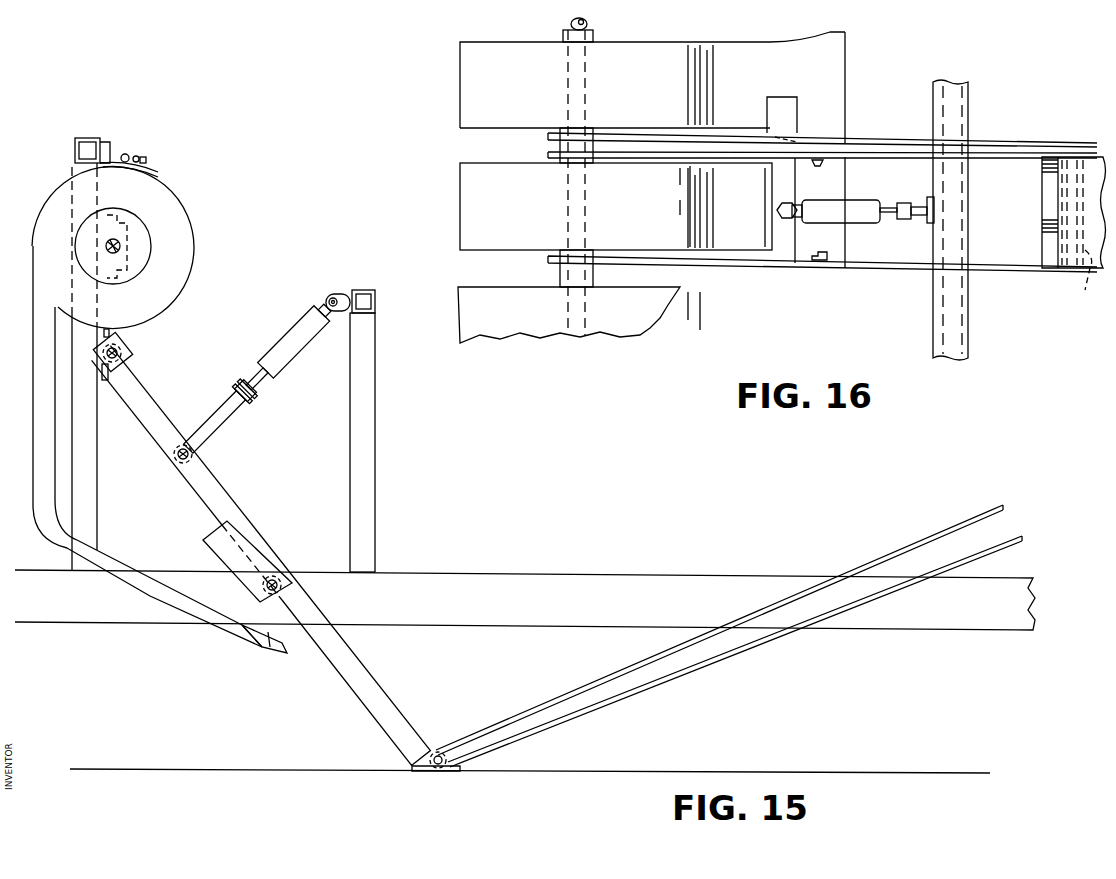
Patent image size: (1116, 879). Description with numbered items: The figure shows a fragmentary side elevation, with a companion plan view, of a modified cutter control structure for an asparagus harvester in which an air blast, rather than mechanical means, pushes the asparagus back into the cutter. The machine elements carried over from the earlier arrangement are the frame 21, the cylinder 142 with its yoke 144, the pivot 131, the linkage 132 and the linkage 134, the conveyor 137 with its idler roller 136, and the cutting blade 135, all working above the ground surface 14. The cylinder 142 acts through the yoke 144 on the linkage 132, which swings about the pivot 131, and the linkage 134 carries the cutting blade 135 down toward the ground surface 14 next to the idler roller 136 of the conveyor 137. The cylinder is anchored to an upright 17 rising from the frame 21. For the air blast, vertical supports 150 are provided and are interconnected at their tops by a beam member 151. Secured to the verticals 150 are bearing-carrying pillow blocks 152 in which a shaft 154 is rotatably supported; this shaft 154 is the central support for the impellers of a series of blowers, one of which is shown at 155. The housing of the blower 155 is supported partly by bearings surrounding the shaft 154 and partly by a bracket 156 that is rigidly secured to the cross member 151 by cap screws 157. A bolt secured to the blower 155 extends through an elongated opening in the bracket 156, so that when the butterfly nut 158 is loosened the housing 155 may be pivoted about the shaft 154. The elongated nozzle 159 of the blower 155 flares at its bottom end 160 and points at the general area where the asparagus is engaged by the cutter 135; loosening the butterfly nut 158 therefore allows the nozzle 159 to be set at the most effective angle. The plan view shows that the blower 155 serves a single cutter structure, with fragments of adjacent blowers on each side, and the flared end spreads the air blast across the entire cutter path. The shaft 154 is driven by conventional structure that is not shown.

In FIG. 15, the ground surface 14 is at (248, 768).
In FIG. 15, the upright post 17 is at (364, 290).
In FIG. 16, the upright post 17 is at (955, 100).
In FIG. 15, the frame 21 is at (497, 578).
In FIG. 15, the pivot 131 is at (128, 349).
In FIG. 15, the linkage 132 is at (150, 392).
In FIG. 16, the linkage 132 is at (608, 257).
In FIG. 15, the linkage 134 is at (372, 688).
In FIG. 16, the linkage 134 is at (997, 270).
In FIG. 15, the cutting blade 135 is at (420, 765).
In FIG. 16, the cutting blade 135 is at (1045, 190).
In FIG. 15, the idler roller 136 is at (442, 752).
In FIG. 16, the idler roller 136 is at (1086, 282).
In FIG. 15, the conveyor 137 is at (608, 680).
In FIG. 16, the conveyor 137 is at (1090, 165).
In FIG. 15, the cylinder 142 is at (290, 328).
In FIG. 16, the cylinder 142 is at (868, 200).
In FIG. 15, the yoke 144 is at (228, 418).
In FIG. 16, the yoke 144 is at (790, 183).
In FIG. 15, the vertical supports 150 is at (88, 458).
In FIG. 15, the beam member 151 is at (82, 138).
In FIG. 15, the pillow blocks 152 is at (128, 236).
In FIG. 15, the shaft 154 is at (120, 246).
In FIG. 16, the shaft 154 is at (570, 24).
In FIG. 15, the blower 155 is at (172, 192).
In FIG. 16, the blower 155 is at (460, 125).
In FIG. 15, the bracket 156 is at (115, 163).
In FIG. 15, the cap screws 157 is at (107, 143).
In FIG. 15, the butterfly nut 158 is at (143, 157).
In FIG. 15, the nozzle 159 is at (200, 607).
In FIG. 16, the nozzle 159 is at (720, 42).
In FIG. 15, the flared bottom end 160 is at (262, 645).
In FIG. 16, the flared bottom end 160 is at (840, 32).